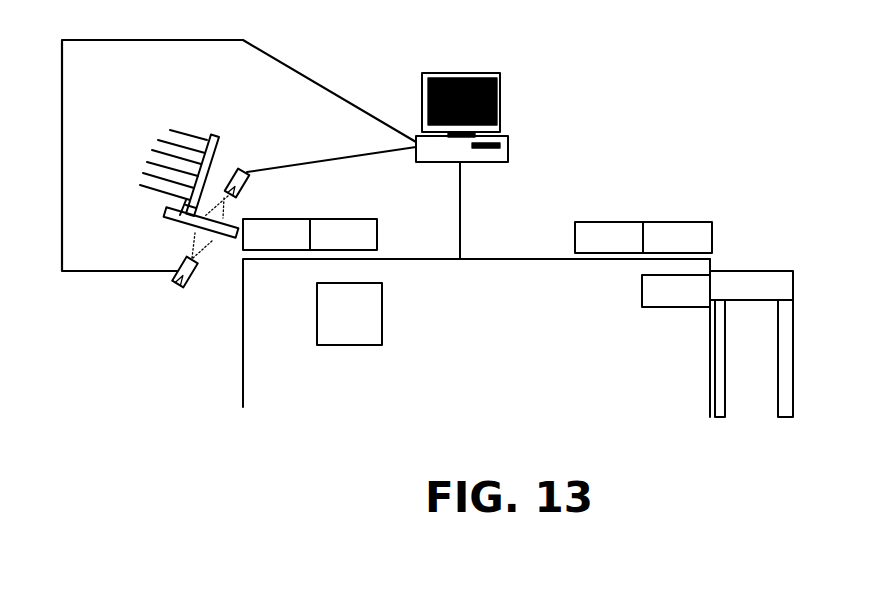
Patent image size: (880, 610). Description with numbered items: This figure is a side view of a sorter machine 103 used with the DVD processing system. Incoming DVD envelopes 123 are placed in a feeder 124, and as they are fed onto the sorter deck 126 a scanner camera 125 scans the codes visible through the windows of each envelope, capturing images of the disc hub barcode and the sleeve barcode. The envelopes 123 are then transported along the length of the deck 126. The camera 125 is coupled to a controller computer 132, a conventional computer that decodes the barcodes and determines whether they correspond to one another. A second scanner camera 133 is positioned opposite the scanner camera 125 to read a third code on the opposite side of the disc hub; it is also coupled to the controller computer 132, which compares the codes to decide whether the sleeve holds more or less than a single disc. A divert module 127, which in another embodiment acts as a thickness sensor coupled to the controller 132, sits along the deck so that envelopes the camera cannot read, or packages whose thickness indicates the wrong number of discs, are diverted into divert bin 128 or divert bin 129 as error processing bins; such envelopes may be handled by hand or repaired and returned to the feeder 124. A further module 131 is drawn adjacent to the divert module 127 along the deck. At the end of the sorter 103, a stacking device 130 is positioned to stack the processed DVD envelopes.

The sorter machine 103 is at (615, 152).
The DVD envelopes 123 is at (168, 128).
The feeder 124 is at (180, 223).
The scanner camera 125 is at (229, 170).
The sorter deck 126 is at (293, 260).
The divert module 127 is at (347, 218).
The divert bin 128 is at (345, 330).
The divert bin 129 is at (662, 293).
The stacking device 130 is at (753, 270).
The module 131 is at (272, 218).
The controller computer 132 is at (507, 150).
The second scanner camera 133 is at (188, 284).